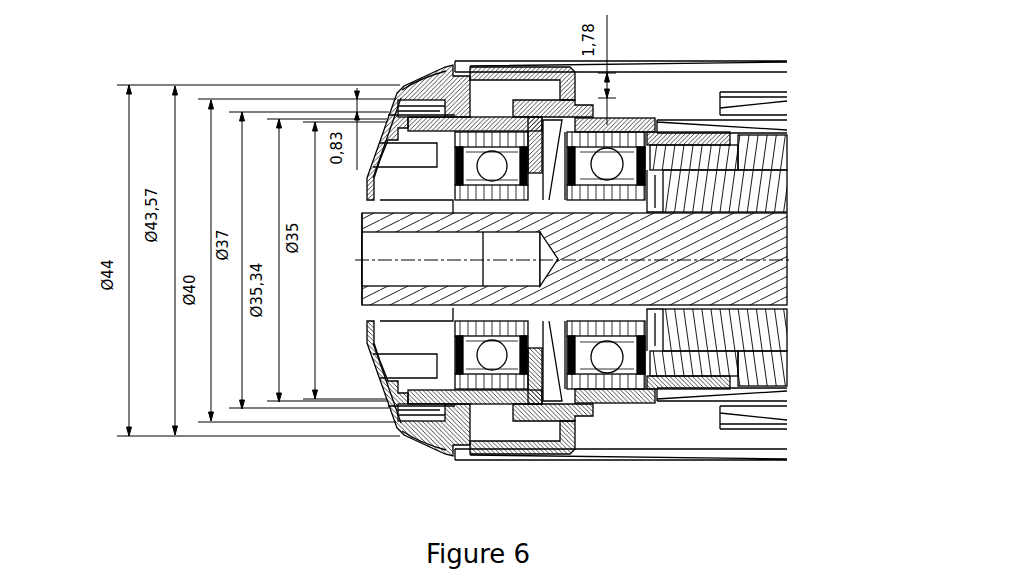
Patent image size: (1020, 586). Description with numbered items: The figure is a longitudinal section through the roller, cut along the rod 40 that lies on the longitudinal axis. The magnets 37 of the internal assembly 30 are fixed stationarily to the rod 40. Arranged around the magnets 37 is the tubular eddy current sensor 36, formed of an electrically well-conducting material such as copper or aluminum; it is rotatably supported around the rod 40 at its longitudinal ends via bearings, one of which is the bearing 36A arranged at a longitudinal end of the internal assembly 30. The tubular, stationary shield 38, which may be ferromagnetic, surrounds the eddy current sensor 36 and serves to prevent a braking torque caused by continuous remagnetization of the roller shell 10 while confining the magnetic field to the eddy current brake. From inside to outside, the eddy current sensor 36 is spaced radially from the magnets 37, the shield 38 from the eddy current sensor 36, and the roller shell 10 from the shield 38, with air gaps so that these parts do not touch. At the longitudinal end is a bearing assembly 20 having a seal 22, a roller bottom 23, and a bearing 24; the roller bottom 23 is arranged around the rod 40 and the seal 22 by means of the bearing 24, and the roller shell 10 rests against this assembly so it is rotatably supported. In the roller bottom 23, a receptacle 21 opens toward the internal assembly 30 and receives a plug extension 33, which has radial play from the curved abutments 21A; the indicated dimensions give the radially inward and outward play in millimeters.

The roller shell 10 is at (762, 62).
The bearing assembly 20 is at (440, 72).
The receptacle 21 is at (501, 90).
The curved abutment 21A is at (513, 115).
The seal 22 is at (367, 350).
The roller bottom 23 is at (418, 75).
The bearing 24 is at (491, 260).
The internal assembly 30 is at (775, 188).
The plug extension 33 is at (548, 100).
The eddy current sensor 36 is at (785, 124).
The bearing 36A is at (610, 158).
The magnet 37 is at (778, 157).
The shield 38 is at (785, 101).
The rod 40 is at (768, 245).